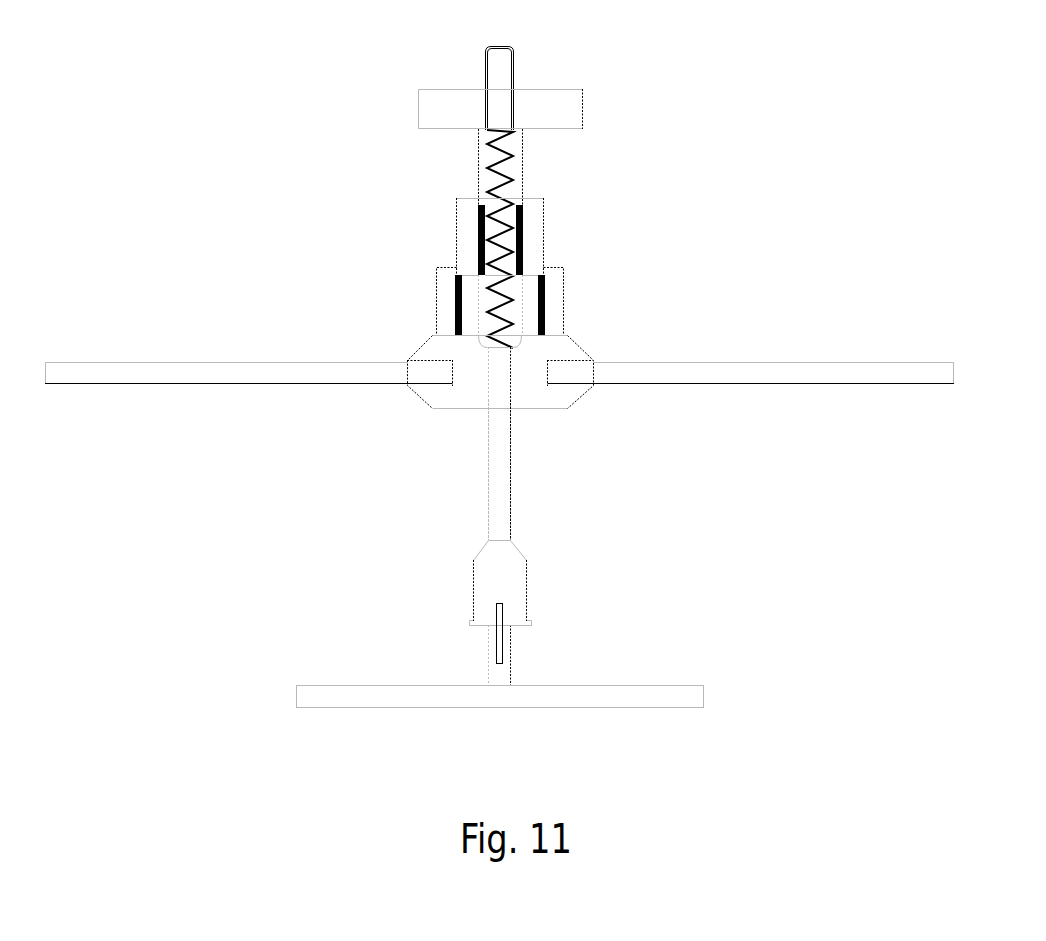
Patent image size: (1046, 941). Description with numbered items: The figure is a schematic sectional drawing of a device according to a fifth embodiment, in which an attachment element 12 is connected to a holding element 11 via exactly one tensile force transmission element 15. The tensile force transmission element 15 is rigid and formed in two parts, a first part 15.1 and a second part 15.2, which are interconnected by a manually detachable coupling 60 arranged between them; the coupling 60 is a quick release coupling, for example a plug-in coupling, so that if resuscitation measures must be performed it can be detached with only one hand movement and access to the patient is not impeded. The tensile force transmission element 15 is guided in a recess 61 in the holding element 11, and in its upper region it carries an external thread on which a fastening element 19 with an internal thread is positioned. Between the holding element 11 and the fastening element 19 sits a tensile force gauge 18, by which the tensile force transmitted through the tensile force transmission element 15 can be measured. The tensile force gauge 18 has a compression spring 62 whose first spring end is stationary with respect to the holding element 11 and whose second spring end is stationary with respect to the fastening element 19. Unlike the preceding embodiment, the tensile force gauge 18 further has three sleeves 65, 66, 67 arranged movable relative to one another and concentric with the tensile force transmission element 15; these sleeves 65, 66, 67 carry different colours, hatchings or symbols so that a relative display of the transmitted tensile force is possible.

The holding element 11 is at (878, 372).
The attachment element 12 is at (672, 693).
The tensile force transmission element 15 is at (502, 452).
The first part 15.1 is at (498, 500).
The second part 15.2 is at (496, 646).
The tensile force gauge 18 is at (405, 192).
The fastening element 19 is at (575, 110).
The coupling 60 is at (490, 565).
The recess 61 is at (478, 356).
The compression spring 62 is at (509, 154).
The sleeve 65 is at (479, 149).
The sleeve 66 is at (457, 237).
The sleeve 67 is at (563, 290).